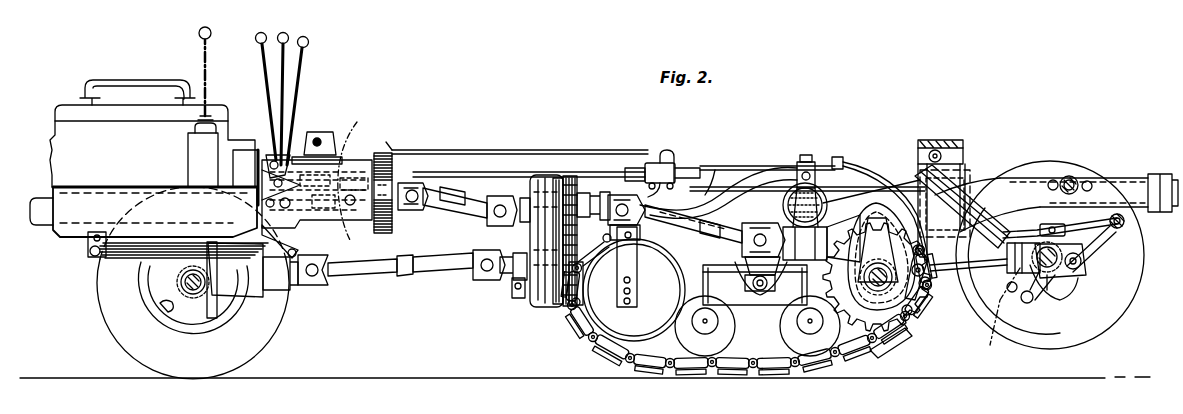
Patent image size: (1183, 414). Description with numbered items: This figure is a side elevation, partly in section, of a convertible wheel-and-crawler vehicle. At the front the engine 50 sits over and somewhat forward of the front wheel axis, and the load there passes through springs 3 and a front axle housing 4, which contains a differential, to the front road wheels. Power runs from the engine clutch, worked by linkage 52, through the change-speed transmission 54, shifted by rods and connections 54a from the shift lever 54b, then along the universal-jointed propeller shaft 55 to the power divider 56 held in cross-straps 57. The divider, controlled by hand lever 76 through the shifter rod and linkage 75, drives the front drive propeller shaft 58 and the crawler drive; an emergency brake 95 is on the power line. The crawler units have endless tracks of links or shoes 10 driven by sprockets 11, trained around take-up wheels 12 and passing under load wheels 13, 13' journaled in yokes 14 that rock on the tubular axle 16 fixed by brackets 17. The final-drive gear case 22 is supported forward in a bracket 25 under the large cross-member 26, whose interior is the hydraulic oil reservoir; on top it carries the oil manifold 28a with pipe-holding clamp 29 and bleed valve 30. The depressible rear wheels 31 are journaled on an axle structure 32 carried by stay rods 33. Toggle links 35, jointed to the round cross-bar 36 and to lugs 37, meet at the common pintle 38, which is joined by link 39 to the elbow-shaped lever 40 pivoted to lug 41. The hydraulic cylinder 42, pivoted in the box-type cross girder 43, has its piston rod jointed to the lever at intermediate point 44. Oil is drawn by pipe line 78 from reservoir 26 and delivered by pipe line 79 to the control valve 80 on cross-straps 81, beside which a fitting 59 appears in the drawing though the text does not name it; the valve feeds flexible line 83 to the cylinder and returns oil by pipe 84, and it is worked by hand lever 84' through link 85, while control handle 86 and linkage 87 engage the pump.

The springs 3 is at (115, 252).
The front axle housing 4 is at (182, 288).
The links or shoes 10 is at (775, 366).
The drive sprockets 11 is at (882, 333).
The take-up wheels 12 is at (600, 308).
The intermediate load wheels 13 is at (705, 350).
The intermediate load wheels 13' is at (811, 350).
The yokes 14 is at (720, 286).
The rocker beam or axle 16 is at (763, 300).
The brackets 17 is at (745, 262).
The gear case 22 is at (866, 215).
The bracket 25 is at (893, 182).
The cross-member 26 is at (841, 157).
The oil manifold 28a is at (812, 158).
The pipe-holding clamp 29 is at (747, 165).
The bleed valve 30 is at (788, 172).
The rear wheels 31 is at (1130, 285).
The axle structure 32 is at (1068, 295).
The stay rods 33 is at (930, 302).
The toggle links 35 is at (1094, 204).
The round cross-bar 36 is at (1072, 180).
The lugs 37 is at (1082, 283).
The pintle 38 is at (1125, 223).
The link 39 is at (1120, 238).
The elbow-shaped lever 40 is at (982, 297).
The lug 41 is at (1044, 292).
The hydraulic cylinder 42 is at (966, 178).
The box-type cross girder 43 is at (940, 140).
The intermediate point 44 is at (993, 345).
The engine 50 is at (112, 135).
The clutch linkage 52 is at (945, 203).
The change-speed transmission 54 is at (344, 192).
The shift rods and connections 54a is at (327, 140).
The shift lever 54b is at (210, 82).
The propeller shaft 55 is at (448, 188).
The power divider 56 is at (540, 178).
The cross-straps 57 is at (593, 254).
The front drive propeller shaft 58 is at (420, 268).
The pipe 59 is at (683, 170).
The shifter rod 75 is at (470, 190).
The hand lever 76 is at (289, 40).
The pipe line 78 is at (442, 210).
The pipe line 79 is at (612, 158).
The control valve 80 is at (658, 163).
The cross-straps 81 is at (690, 182).
The flexible line 83 is at (945, 204).
The return pipe 84 is at (767, 156).
The hand lever 84' is at (251, 91).
The link 85 is at (366, 135).
The control handle 86 is at (296, 74).
The linkage 87 is at (311, 237).
The emergency brake 95 is at (393, 158).